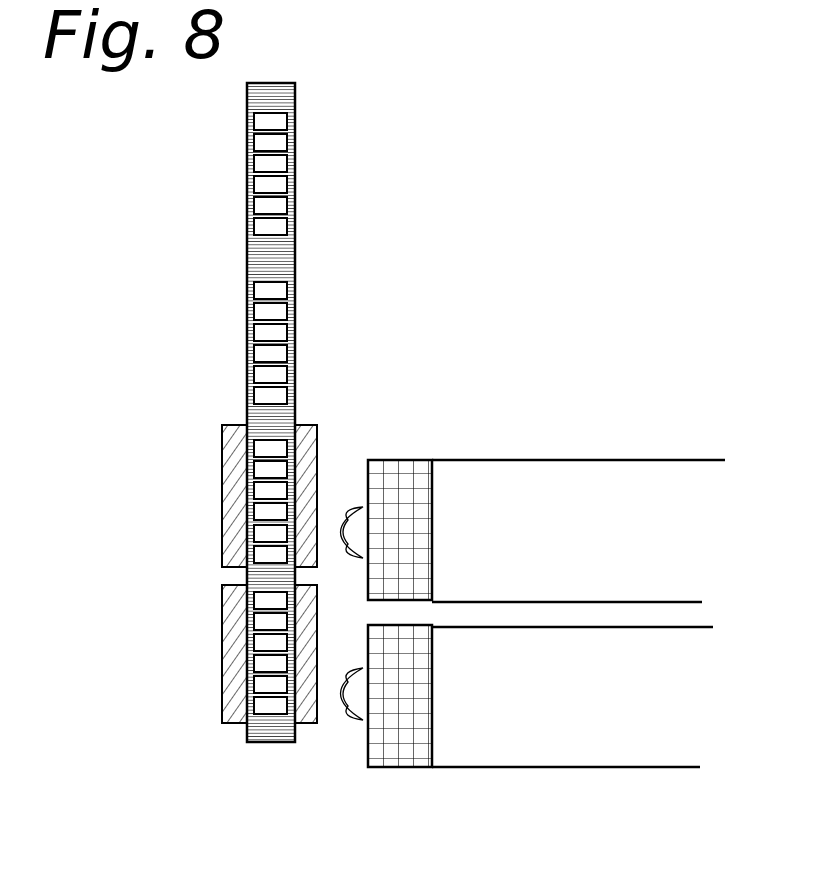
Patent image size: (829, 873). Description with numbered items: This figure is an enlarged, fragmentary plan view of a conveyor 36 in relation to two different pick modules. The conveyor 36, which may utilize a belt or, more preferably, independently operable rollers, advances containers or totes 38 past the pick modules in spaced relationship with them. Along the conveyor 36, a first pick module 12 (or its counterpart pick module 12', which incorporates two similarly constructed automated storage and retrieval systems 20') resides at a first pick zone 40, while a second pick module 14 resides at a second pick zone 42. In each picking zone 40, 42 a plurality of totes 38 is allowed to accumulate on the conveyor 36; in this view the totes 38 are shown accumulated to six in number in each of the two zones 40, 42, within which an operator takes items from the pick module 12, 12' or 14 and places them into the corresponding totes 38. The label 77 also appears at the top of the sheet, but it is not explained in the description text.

The automated storage and retrieval system 20' is at (509, 20).
The sensor 77 is at (604, 0).
The conveyor 36 is at (299, 326).
The containers/totes 38 is at (246, 460).
The pick zone 40 is at (336, 478).
The pick zone 42 is at (345, 640).
The pick module 12 is at (578, 531).
The pick module 12' is at (578, 531).
The pick module 14 is at (600, 743).